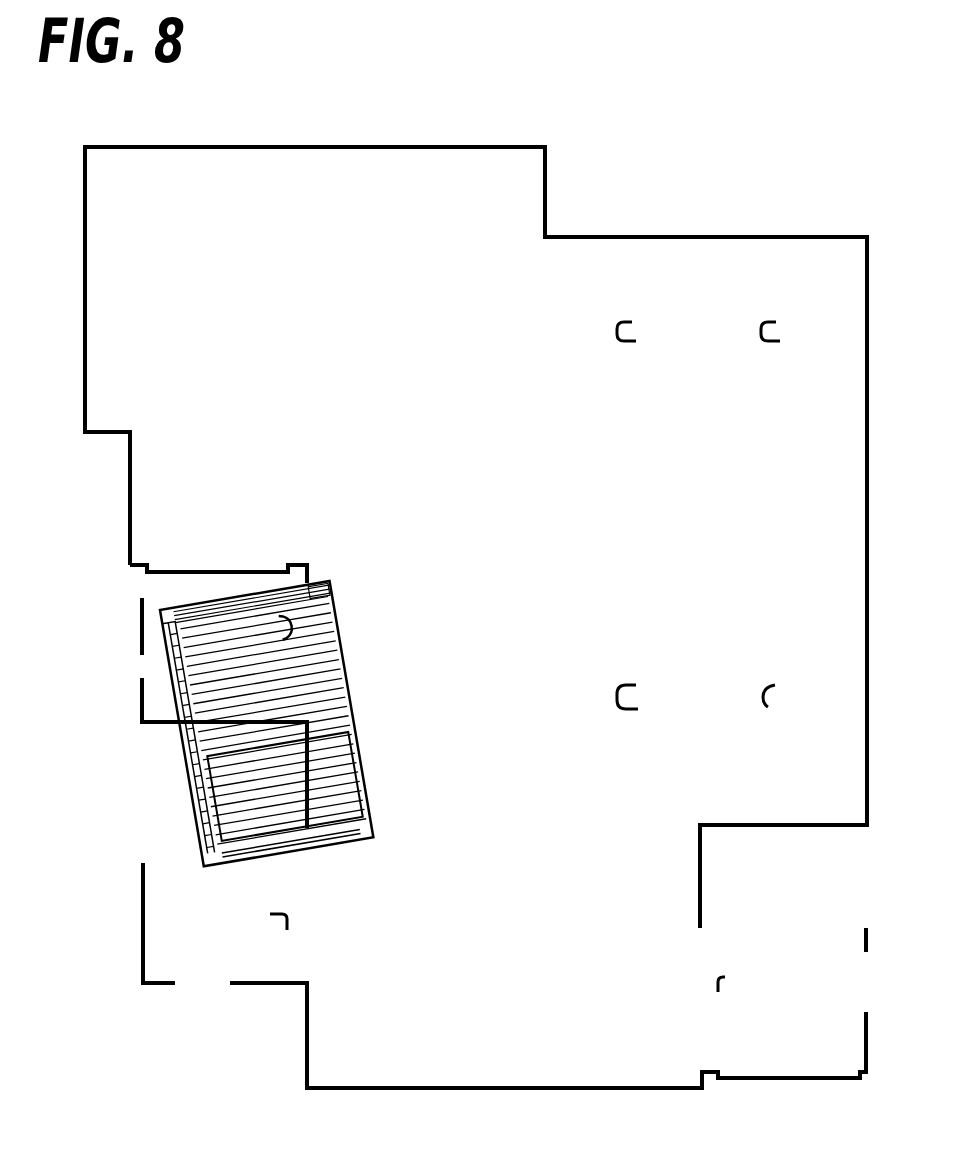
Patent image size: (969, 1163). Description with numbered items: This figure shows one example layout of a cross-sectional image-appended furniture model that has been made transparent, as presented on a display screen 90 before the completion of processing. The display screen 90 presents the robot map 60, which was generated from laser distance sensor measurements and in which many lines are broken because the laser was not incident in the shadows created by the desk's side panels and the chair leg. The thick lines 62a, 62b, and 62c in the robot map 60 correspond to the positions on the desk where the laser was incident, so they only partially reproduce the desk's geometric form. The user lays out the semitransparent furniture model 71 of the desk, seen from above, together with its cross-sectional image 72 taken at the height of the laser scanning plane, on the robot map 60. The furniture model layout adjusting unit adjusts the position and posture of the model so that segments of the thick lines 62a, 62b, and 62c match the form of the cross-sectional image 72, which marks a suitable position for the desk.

The robot map 60 is at (425, 146).
The thick line 62a is at (170, 567).
The thick line 62b is at (138, 625).
The thick line 62c is at (178, 732).
The furniture model of the desk 71 is at (330, 662).
The cross-sectional image 72 is at (323, 583).
The display screen 90 is at (745, 135).